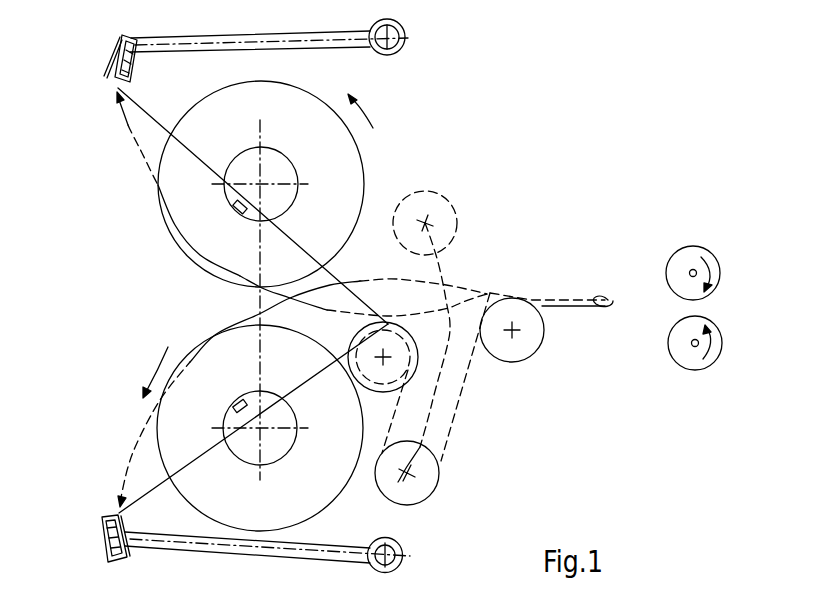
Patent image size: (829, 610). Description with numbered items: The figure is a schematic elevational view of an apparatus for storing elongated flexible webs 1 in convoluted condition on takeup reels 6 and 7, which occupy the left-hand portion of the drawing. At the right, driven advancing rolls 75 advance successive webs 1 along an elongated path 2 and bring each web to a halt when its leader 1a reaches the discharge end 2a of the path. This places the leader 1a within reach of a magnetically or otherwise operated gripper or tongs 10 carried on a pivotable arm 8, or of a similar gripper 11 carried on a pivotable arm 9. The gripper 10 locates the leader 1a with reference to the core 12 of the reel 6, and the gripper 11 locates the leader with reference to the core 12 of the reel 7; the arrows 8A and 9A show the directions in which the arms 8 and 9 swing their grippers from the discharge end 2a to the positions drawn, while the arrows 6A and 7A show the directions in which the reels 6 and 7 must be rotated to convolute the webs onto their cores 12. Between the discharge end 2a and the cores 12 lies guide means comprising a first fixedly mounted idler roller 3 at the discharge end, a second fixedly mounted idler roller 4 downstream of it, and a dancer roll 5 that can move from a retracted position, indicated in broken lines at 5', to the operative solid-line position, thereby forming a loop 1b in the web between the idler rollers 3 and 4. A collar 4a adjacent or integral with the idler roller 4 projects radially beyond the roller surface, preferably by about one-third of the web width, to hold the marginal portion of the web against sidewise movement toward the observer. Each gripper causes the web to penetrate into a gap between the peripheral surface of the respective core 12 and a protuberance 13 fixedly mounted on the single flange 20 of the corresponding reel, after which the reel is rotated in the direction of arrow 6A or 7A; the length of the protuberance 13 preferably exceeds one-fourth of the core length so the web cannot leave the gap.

The elongated flexible web 1 is at (455, 443).
The leader 1a is at (131, 91).
The loop 1b is at (393, 408).
The elongated path 2 is at (612, 299).
The discharge end 2a is at (492, 285).
The first fixedly mounted idler roller 3 is at (527, 348).
The second fixedly mounted idler roller 4 is at (402, 367).
The collar 4a is at (362, 380).
The dancer roll 5 is at (430, 473).
The retracted position of dancer roll 5' is at (445, 223).
The takeup reel 6 is at (389, 174).
The arrow 6A is at (372, 124).
The takeup reel 7 is at (362, 522).
The arrow 7A is at (142, 380).
The pivotable arm 8 is at (186, 53).
The arrow 8A is at (121, 117).
The pivotable arm 9 is at (178, 548).
The arrow 9A is at (125, 477).
The gripper 10 is at (108, 62).
The gripper 11 is at (100, 538).
The core 12 is at (277, 160).
The protuberance 13 is at (237, 212).
The flange 20 is at (188, 242).
The driven advancing rolls 75 is at (684, 234).